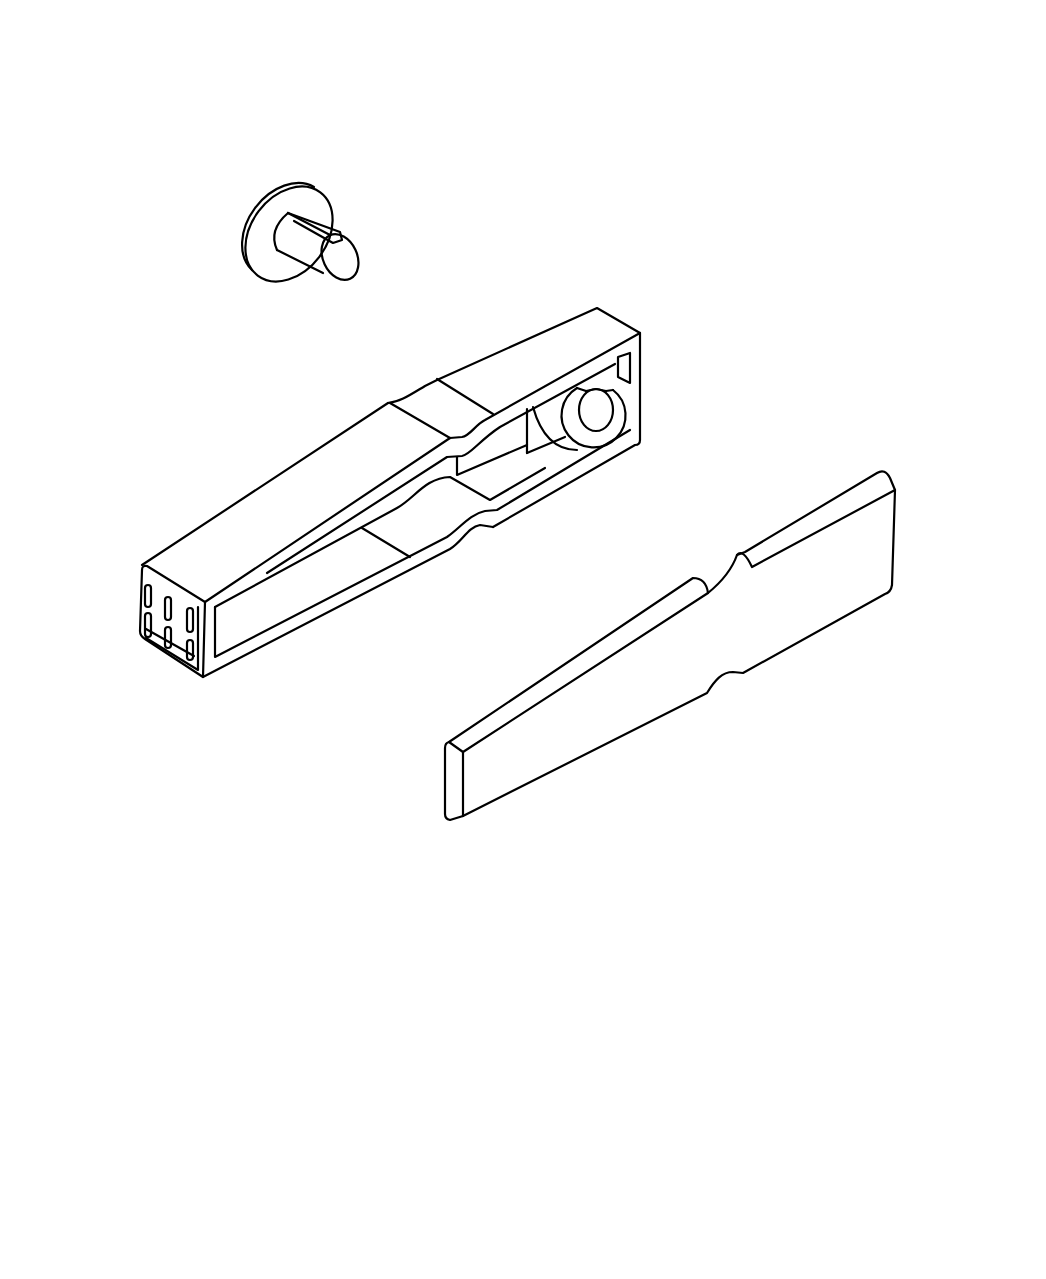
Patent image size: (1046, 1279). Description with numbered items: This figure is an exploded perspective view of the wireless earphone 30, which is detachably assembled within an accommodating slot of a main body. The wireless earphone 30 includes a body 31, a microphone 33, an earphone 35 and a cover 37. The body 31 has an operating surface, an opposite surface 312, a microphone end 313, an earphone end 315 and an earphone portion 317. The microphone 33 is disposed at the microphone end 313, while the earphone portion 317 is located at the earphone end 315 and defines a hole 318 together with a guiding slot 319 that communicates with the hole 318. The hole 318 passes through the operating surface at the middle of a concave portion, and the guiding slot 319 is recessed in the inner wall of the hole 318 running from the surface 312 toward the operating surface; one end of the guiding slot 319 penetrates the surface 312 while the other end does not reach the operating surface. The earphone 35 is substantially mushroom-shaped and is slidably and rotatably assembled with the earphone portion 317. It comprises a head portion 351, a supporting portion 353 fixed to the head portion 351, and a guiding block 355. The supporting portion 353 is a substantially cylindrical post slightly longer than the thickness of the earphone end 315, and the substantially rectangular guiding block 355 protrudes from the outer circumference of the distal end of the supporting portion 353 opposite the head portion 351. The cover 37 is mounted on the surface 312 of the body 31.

The wireless earphone 30 is at (348, 63).
The body 31 is at (640, 317).
The surface 312 is at (598, 373).
The microphone end 313 is at (217, 543).
The earphone end 315 is at (555, 347).
The earphone portion 317 is at (738, 338).
The hole 318 is at (603, 412).
The guiding slot 319 is at (598, 385).
The microphone 33 is at (155, 645).
The earphone 35 is at (133, 133).
The head portion 351 is at (260, 210).
The supporting portion 353 is at (293, 250).
The guiding block 355 is at (330, 280).
The cover 37 is at (797, 625).